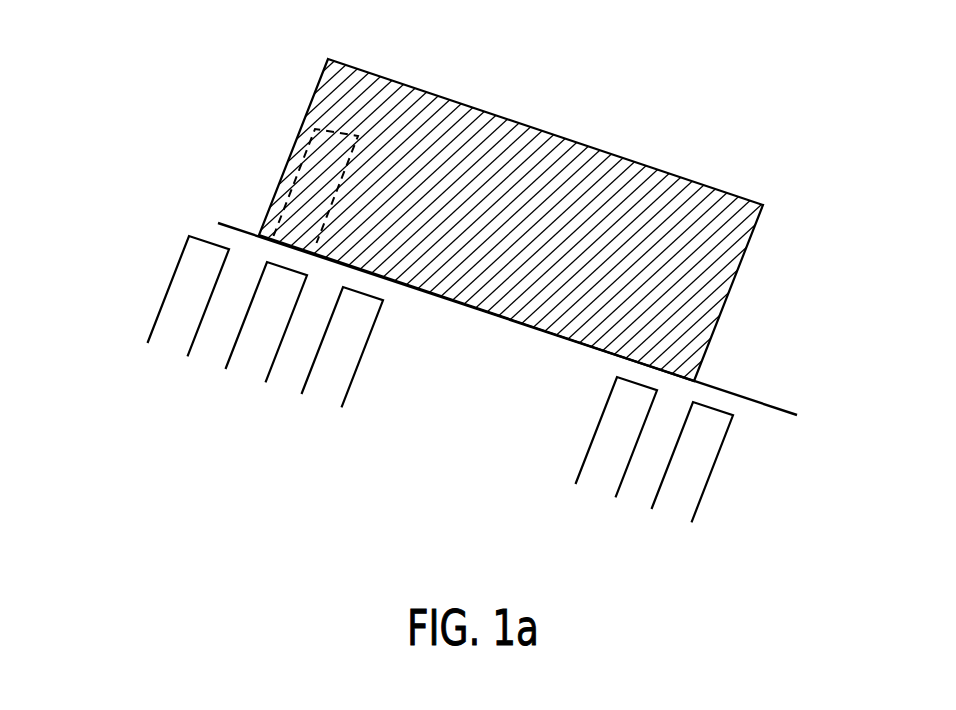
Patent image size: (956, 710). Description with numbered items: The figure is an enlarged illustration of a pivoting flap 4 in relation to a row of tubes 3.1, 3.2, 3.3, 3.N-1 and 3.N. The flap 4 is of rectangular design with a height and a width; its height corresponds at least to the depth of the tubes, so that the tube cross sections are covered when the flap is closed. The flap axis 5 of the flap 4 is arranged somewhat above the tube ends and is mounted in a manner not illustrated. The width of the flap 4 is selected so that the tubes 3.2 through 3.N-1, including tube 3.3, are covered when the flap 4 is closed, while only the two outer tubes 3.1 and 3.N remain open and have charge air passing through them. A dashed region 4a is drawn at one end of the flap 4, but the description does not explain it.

The flap 4 is at (616, 149).
The segment of carrier body 4a is at (292, 182).
The flap axis 5 is at (742, 396).
The tube 3.1 is at (169, 338).
The tube 3.2 is at (245, 365).
The tube 3.3 is at (323, 390).
The tube 3.N-1 is at (597, 485).
The tube 3.N is at (673, 510).